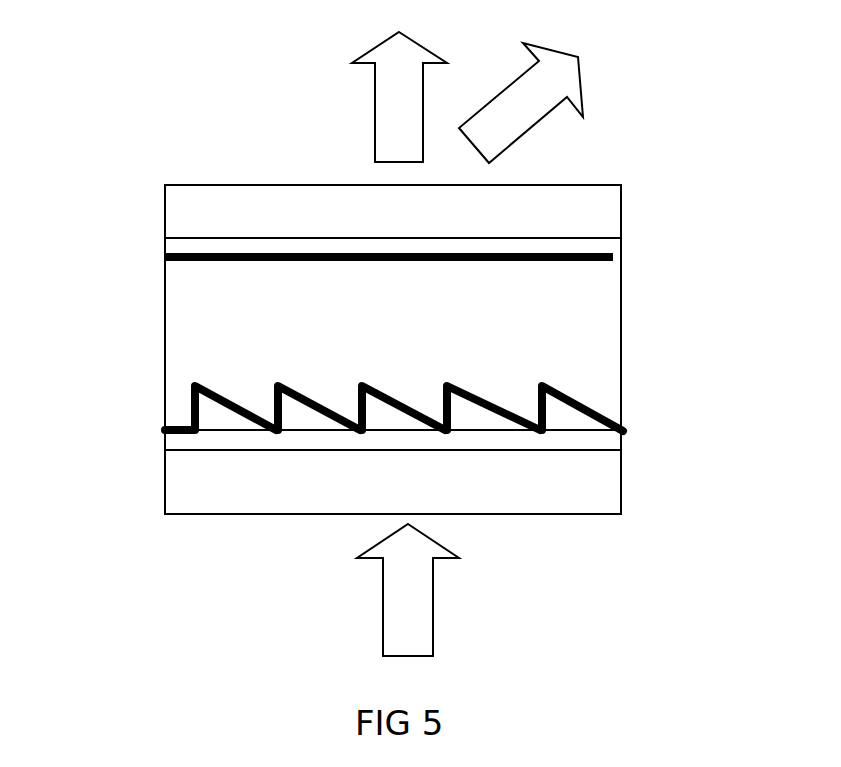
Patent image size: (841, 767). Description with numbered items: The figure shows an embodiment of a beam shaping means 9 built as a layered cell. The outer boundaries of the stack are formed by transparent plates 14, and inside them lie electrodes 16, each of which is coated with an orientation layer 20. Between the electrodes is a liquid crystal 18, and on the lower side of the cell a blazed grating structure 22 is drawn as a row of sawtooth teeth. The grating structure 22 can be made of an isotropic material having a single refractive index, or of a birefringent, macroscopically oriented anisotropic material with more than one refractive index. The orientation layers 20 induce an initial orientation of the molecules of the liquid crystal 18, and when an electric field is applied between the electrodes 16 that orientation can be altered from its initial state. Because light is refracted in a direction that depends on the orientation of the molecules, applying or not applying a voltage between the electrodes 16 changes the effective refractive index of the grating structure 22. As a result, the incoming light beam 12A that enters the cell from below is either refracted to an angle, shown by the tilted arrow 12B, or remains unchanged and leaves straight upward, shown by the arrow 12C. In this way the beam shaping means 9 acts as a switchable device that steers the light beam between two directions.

The beam shaping means 9 is at (139, 538).
The incoming light beam 12A is at (377, 622).
The refracted light beam angle 12B is at (583, 100).
The unchanged light beam 12C is at (377, 117).
The transparent plates 14 is at (160, 188).
The electrodes 16 is at (160, 246).
The liquid crystal 18 is at (160, 330).
The orientation layers 20 is at (162, 259).
The blazed grating structure 22 is at (190, 420).